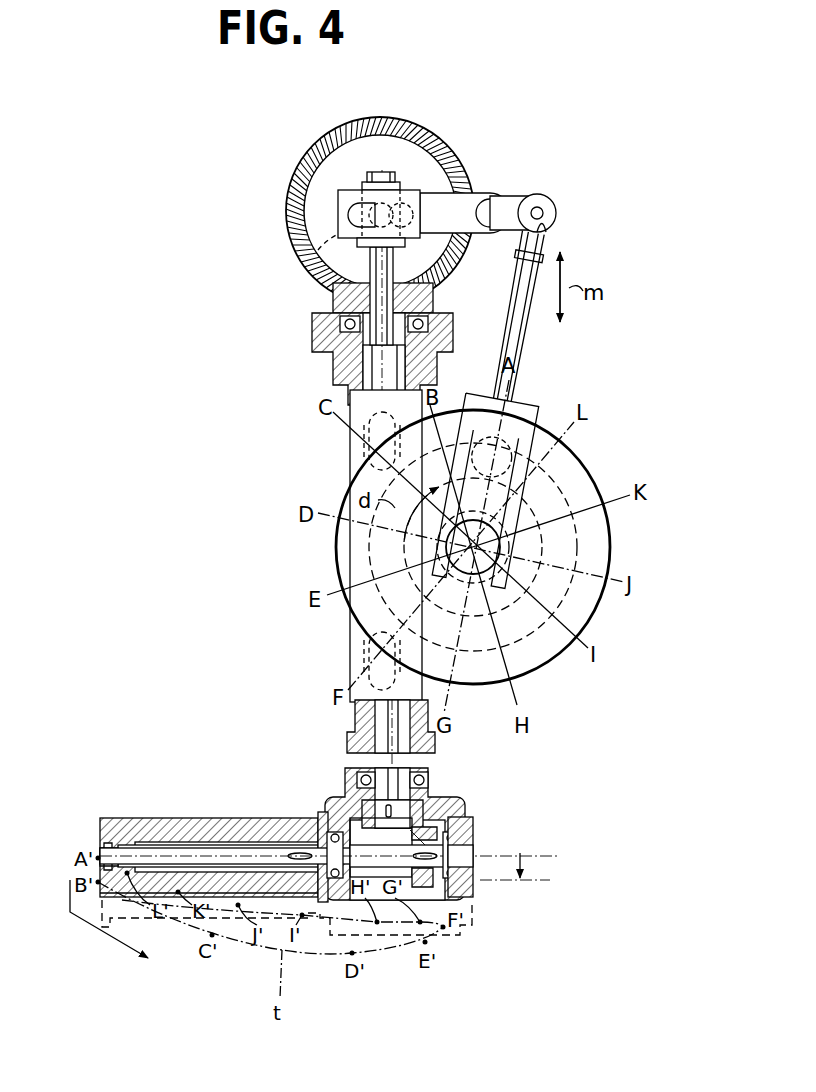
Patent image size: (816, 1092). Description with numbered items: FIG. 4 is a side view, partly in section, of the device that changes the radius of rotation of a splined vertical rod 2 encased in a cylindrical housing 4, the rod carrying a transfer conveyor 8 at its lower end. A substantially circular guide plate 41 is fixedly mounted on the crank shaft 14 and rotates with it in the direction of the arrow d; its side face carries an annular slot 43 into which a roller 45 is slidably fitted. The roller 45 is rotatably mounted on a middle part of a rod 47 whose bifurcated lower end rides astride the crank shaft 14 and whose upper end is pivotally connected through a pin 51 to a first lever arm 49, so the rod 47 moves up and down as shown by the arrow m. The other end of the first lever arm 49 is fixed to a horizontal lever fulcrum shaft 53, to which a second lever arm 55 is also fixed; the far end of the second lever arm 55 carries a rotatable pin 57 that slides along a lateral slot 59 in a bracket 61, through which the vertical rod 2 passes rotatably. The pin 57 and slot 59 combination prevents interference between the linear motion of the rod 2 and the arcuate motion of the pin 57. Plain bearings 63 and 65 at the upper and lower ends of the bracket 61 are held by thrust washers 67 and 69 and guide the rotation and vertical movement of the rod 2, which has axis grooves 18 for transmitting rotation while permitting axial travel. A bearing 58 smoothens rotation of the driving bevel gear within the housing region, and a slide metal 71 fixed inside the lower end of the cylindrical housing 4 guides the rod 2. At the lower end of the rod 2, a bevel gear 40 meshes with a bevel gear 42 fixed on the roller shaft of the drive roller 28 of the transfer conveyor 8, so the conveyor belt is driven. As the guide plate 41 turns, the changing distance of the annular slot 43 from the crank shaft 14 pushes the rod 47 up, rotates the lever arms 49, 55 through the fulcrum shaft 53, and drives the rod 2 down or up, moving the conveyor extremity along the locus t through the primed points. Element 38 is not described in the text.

The splined vertical rod 2 is at (372, 362).
The cylindrical housing 4 is at (312, 331).
The transfer conveyor 8 is at (129, 813).
The crank shaft 14 is at (476, 580).
The axis grooves 18 is at (393, 268).
The drive roller 28 is at (223, 818).
The bearing 38 is at (422, 782).
The bevel gear 40 is at (408, 812).
The guide plate 41 is at (600, 538).
The bevel gear 42 is at (468, 826).
The annular slot 43 is at (548, 477).
The roller 45 is at (533, 398).
The rod 47 is at (527, 345).
The first lever arm 49 is at (516, 196).
The pin 51 is at (545, 213).
The lever fulcrum shaft 53 is at (490, 199).
The second lever arm 55 is at (438, 197).
The rotatable pin 57 is at (381, 172).
The bearing 58 is at (426, 326).
The lateral slot 59 is at (352, 215).
The bracket 61 is at (340, 200).
The plain bearing 63 is at (366, 188).
The plain bearing 65 is at (350, 238).
The thrust washer 67 is at (333, 192).
The thrust washer 69 is at (358, 247).
The slide metal 71 is at (352, 738).